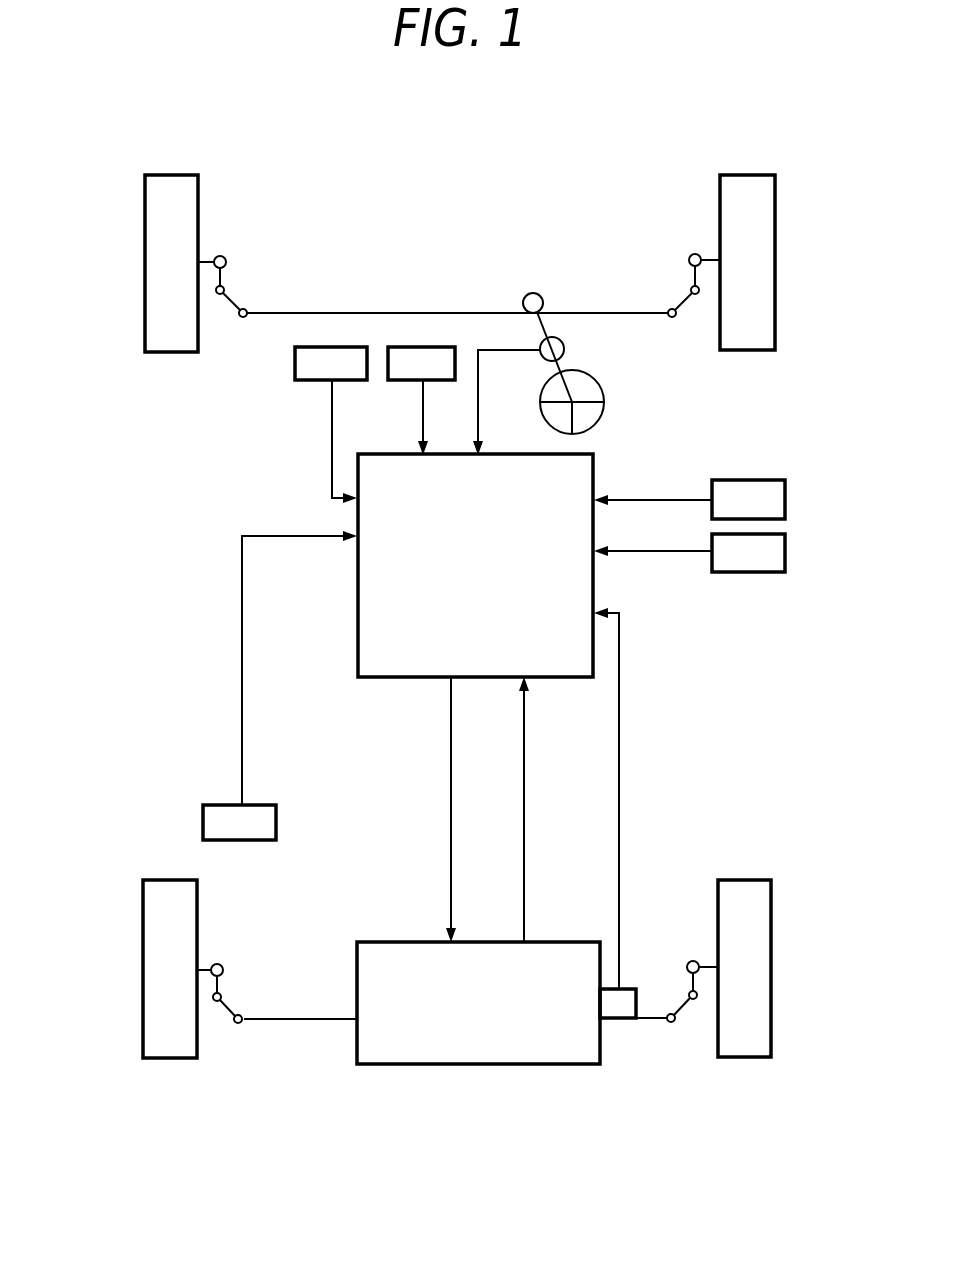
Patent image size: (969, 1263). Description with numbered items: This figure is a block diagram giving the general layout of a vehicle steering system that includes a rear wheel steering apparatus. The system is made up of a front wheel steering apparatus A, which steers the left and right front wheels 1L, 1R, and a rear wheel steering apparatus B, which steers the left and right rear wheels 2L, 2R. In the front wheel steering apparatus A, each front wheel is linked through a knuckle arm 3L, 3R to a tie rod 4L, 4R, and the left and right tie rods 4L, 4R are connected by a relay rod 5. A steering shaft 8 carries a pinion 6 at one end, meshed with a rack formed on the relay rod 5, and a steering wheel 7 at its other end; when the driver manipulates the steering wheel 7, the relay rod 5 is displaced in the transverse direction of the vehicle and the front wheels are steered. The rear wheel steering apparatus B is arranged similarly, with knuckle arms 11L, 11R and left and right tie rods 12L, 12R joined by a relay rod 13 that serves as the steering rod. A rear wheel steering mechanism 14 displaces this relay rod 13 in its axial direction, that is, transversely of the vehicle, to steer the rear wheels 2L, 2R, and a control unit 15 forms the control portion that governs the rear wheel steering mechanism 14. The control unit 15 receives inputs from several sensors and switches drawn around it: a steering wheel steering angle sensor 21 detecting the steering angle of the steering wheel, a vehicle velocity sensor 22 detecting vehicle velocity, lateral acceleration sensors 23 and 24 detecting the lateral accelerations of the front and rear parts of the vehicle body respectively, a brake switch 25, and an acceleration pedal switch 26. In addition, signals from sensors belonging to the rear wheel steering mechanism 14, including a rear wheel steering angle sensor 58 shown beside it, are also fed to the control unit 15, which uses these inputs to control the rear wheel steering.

The left front wheel 1L is at (145, 209).
The right front wheel 1R is at (775, 238).
The left rear wheel 2L is at (143, 893).
The right rear wheel 2R is at (773, 920).
The knuckle arm 3L is at (226, 270).
The knuckle arm 3R is at (693, 275).
The tie rod 4L is at (233, 308).
The tie rod 4R is at (688, 300).
The relay rod 5 is at (402, 310).
The pinion 6 is at (538, 294).
The steering wheel 7 is at (602, 413).
The steering shaft 8 is at (557, 360).
The steering wheel steering angle sensor 21 is at (563, 345).
The vehicle velocity sensor 22 is at (388, 378).
The lateral acceleration sensor 23 is at (295, 373).
The lateral acceleration sensor 24 is at (276, 825).
The brake switch 25 is at (785, 498).
The acceleration pedal switch 26 is at (785, 552).
The control unit 15 is at (405, 678).
The rear wheel steering mechanism 14 is at (480, 1065).
The relay rod 13 is at (315, 1019).
The rear wheel steering angle sensor 58 is at (623, 1010).
The knuckle arm 11L is at (222, 985).
The knuckle arm 11R is at (688, 978).
The tie rod 12L is at (232, 1012).
The tie rod 12R is at (682, 1008).
The front wheel steering apparatus A is at (525, 208).
The rear wheel steering apparatus B is at (603, 1102).